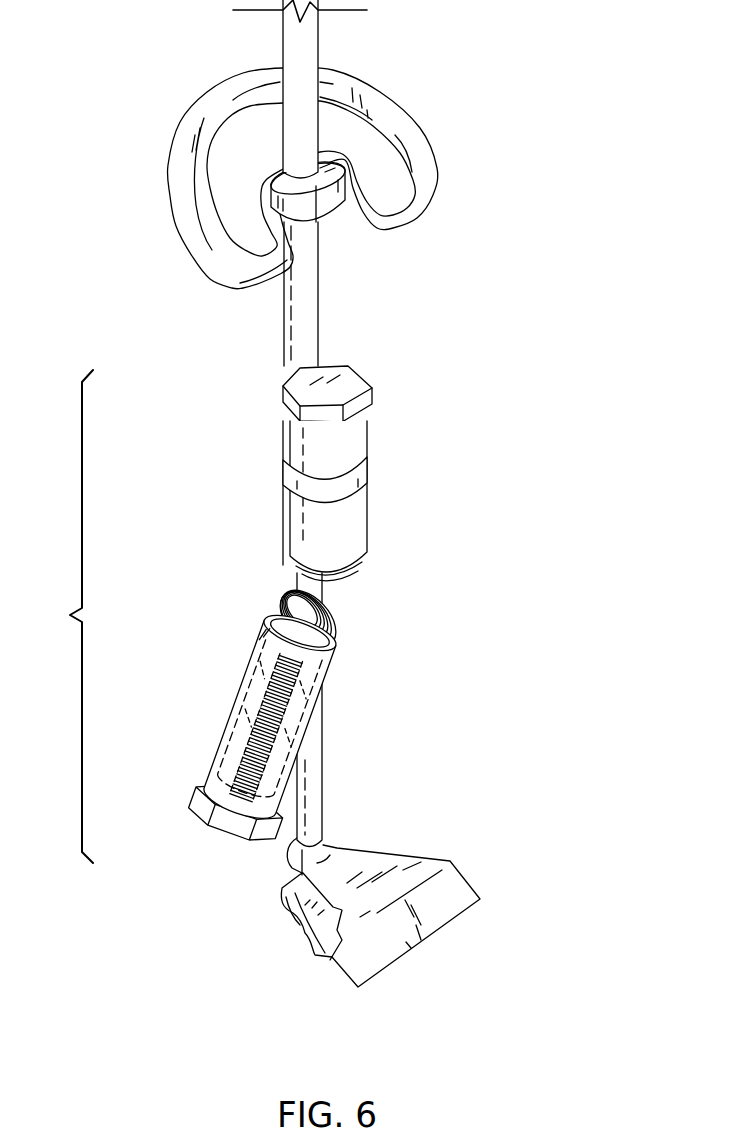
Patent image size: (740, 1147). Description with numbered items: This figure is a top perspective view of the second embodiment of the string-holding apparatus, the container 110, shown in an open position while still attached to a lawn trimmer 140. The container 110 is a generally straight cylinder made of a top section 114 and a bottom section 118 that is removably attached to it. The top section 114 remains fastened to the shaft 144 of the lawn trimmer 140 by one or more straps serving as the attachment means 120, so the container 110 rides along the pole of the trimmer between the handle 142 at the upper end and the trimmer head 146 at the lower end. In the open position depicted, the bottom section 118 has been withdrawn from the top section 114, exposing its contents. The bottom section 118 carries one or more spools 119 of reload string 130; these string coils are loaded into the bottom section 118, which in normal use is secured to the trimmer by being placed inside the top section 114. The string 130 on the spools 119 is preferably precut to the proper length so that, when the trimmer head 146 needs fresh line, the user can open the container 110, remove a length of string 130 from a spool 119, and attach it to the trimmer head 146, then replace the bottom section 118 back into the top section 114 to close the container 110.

The container 110 is at (56, 616).
The top section 114 is at (297, 443).
The bottom section 118 is at (247, 678).
The spindle or spool 119 is at (332, 622).
The attachment means 120 is at (370, 472).
The string 130 is at (332, 612).
The lawn trimmer 140 is at (318, 305).
The handle 142 is at (417, 128).
The shaft/pole 144 is at (282, 32).
The trimmer head 146 is at (442, 905).